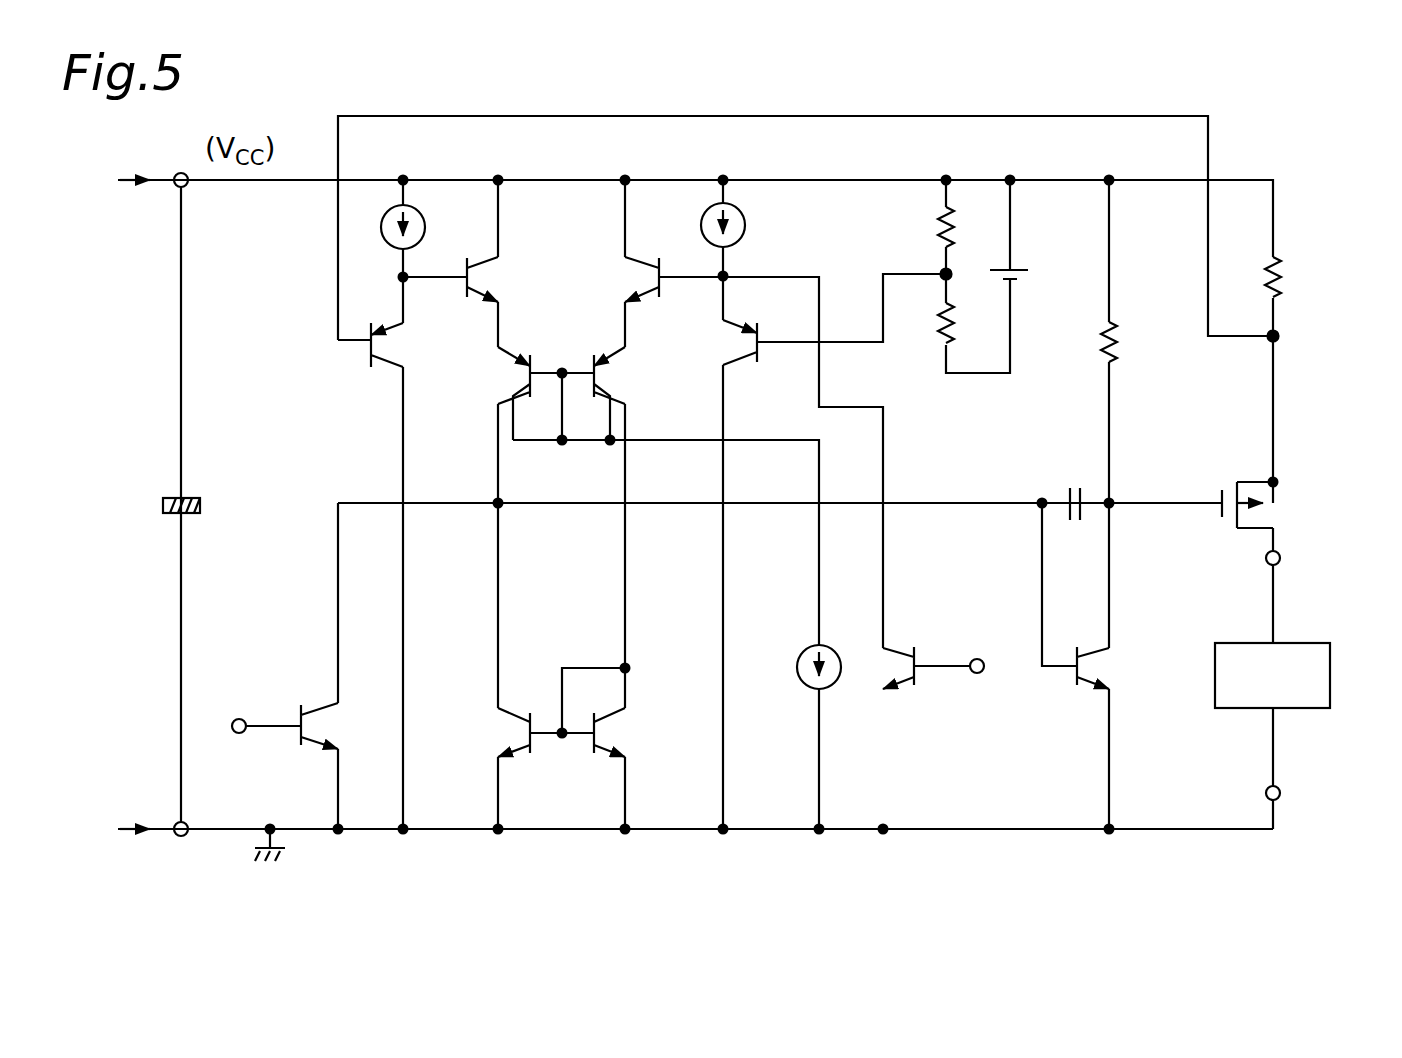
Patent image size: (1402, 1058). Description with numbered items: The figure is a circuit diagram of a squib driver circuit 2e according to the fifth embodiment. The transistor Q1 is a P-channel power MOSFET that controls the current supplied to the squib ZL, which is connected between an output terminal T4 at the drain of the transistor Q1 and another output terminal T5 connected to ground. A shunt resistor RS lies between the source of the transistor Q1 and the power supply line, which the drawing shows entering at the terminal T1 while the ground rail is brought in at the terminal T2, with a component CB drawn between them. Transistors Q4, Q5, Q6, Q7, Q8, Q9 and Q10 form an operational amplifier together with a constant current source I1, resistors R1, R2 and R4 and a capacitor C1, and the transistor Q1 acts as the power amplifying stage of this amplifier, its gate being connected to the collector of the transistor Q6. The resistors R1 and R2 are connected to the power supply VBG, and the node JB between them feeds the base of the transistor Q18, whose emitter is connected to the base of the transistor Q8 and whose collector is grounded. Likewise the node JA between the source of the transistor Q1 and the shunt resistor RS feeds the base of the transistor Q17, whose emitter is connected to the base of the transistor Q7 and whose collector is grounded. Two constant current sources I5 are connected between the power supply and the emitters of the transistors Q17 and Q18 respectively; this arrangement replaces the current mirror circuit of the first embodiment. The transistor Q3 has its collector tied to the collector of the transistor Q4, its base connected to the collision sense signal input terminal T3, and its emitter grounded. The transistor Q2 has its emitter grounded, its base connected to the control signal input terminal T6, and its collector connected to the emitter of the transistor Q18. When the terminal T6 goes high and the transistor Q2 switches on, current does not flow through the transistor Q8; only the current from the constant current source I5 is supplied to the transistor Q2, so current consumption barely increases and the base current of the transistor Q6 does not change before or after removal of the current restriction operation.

The squib driver circuit 2e is at (695, 859).
The power supply terminal T1 is at (180, 188).
The ground terminal T2 is at (181, 836).
The collision sense signal input terminal T3 is at (238, 719).
The output terminal T4 is at (1266, 558).
The output terminal T5 is at (1266, 793).
The control signal input terminal T6 is at (976, 659).
The bypass capacitor CB is at (170, 500).
The constant current source I5 is at (426, 224).
The constant current source I1 is at (805, 652).
The transistor Q17 is at (368, 370).
The transistor Q7 is at (462, 305).
The transistor Q8 is at (666, 305).
The transistor Q9 is at (532, 362).
The transistor Q10 is at (592, 362).
The transistor Q18 is at (760, 362).
The transistor Q3 is at (300, 710).
The transistor Q4 is at (532, 718).
The transistor Q5 is at (592, 750).
The transistor Q2 is at (916, 685).
The transistor Q6 is at (1072, 685).
The transistor Q1 is at (1232, 480).
The resistor R1 is at (938, 225).
The resistor R2 is at (938, 338).
The resistor R4 is at (1100, 338).
The shunt resistor RS is at (1264, 275).
The node JB is at (953, 274).
The node JA is at (1268, 340).
The power supply VBG is at (1022, 262).
The capacitor C1 is at (1075, 486).
The squib ZL is at (1330, 675).